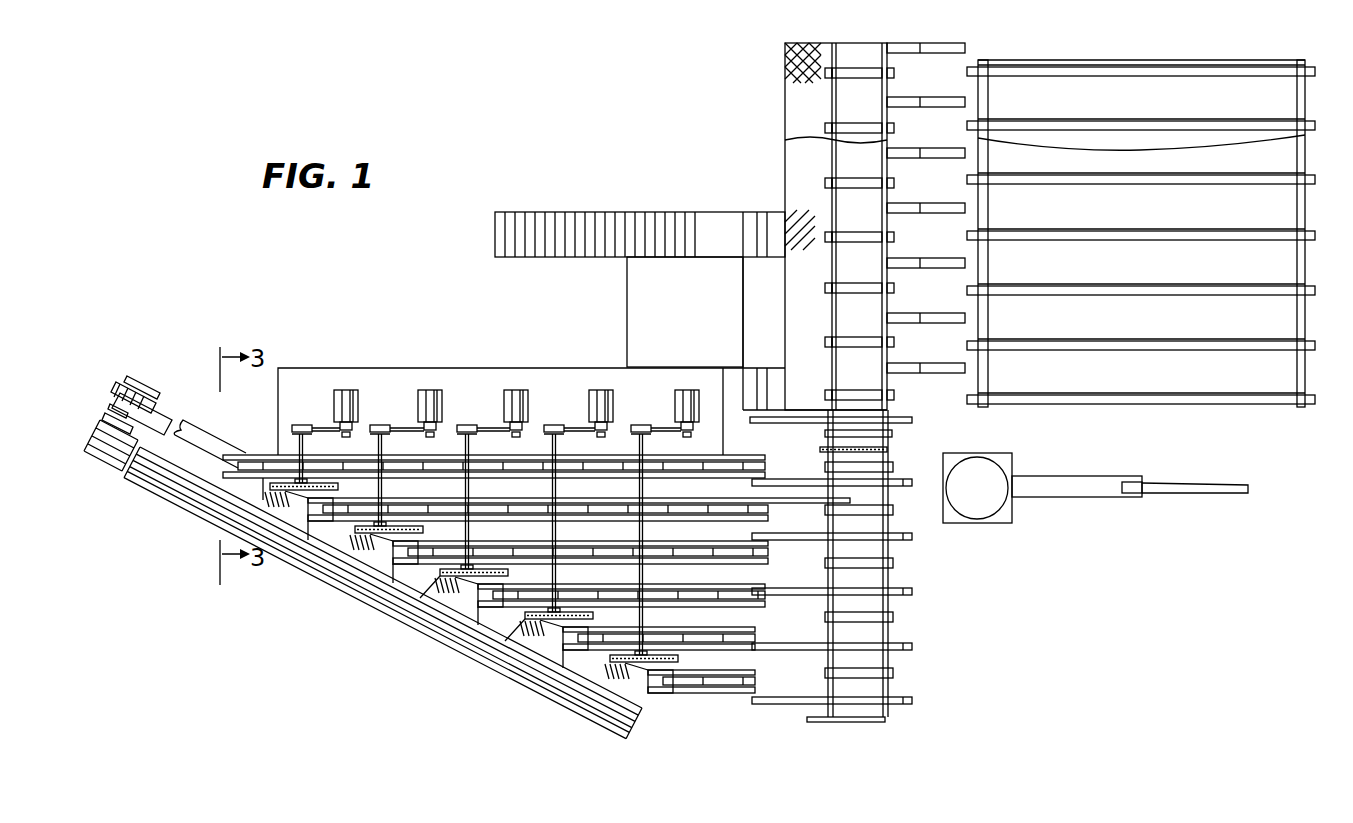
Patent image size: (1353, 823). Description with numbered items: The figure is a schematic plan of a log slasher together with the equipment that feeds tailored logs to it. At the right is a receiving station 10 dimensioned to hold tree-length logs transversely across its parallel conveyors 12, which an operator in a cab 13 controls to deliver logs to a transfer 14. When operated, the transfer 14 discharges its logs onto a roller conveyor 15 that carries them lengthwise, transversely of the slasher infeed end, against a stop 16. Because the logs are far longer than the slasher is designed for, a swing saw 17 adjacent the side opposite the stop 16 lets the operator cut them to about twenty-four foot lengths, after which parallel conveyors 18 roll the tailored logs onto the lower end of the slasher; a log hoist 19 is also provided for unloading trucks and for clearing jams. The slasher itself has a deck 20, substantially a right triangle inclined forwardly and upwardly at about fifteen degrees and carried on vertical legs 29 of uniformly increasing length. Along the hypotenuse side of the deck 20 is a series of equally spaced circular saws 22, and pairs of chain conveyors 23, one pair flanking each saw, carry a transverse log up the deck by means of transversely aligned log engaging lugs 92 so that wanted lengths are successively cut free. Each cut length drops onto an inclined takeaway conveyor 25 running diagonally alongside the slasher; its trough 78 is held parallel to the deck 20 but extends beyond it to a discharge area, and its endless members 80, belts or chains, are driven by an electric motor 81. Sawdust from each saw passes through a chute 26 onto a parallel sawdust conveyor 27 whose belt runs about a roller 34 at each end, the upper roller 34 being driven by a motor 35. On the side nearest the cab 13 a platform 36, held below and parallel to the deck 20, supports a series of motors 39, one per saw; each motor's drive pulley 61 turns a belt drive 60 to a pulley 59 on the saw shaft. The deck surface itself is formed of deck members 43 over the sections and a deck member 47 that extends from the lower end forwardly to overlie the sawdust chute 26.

The receiving station 10 is at (1276, 418).
The parallel conveyors 12 is at (1285, 217).
The cab 13 is at (630, 313).
The transfer 14 is at (938, 388).
The roller conveyor 15 is at (942, 78).
The stop 16 is at (858, 724).
The swing saw 17 is at (812, 452).
The parallel conveyors 18 is at (932, 635).
The log hoist 19 is at (1064, 516).
The deck 20 is at (713, 662).
The circular saws 22 is at (478, 606).
The conveyors 23 is at (758, 521).
The takeaway conveyor 25 is at (370, 610).
The chute 26 is at (368, 541).
The sawdust conveyor 27 is at (232, 436).
The vertical legs 29 is at (540, 615).
The roller 34 is at (112, 396).
The motor 35 is at (162, 396).
The platform 36 is at (416, 376).
The motors 39 is at (518, 408).
The deck member 43 is at (750, 560).
The deck member 47 is at (745, 614).
The pulley 59 is at (462, 427).
The belt drive 60 is at (490, 427).
The drive pulley 61 is at (603, 432).
The trough 78 is at (178, 468).
The endless members 80 is at (632, 712).
The electric motor 81 is at (97, 470).
The log engaging lugs 92 is at (328, 457).